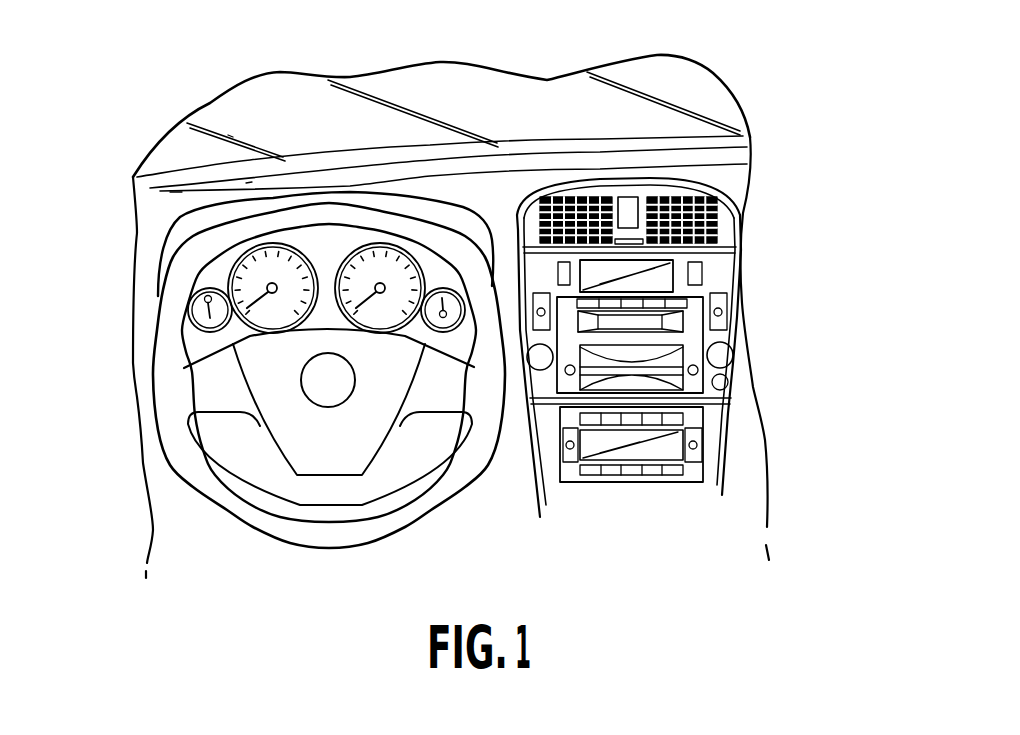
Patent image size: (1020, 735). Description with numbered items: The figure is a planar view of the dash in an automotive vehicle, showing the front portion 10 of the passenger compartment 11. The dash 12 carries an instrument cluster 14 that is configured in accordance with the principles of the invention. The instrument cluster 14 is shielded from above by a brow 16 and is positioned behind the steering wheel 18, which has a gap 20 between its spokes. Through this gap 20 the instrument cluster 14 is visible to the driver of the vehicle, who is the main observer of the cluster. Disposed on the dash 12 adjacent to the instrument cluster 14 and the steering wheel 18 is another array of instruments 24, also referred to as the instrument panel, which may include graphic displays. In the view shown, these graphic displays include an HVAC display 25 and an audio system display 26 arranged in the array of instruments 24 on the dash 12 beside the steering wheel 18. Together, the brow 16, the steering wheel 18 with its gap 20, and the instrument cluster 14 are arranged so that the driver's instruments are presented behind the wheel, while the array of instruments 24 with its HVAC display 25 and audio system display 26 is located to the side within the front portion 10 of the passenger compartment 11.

The front portion 10 is at (713, 97).
The passenger compartment 11 is at (806, 194).
The dash 12 is at (158, 203).
The instrument cluster 14 is at (413, 259).
The brow 16 is at (230, 207).
The steering wheel 18 is at (163, 393).
The gap 20 is at (236, 292).
The array of instruments 24 is at (516, 490).
The HVAC display 25 is at (633, 447).
The audio system display 26 is at (670, 273).